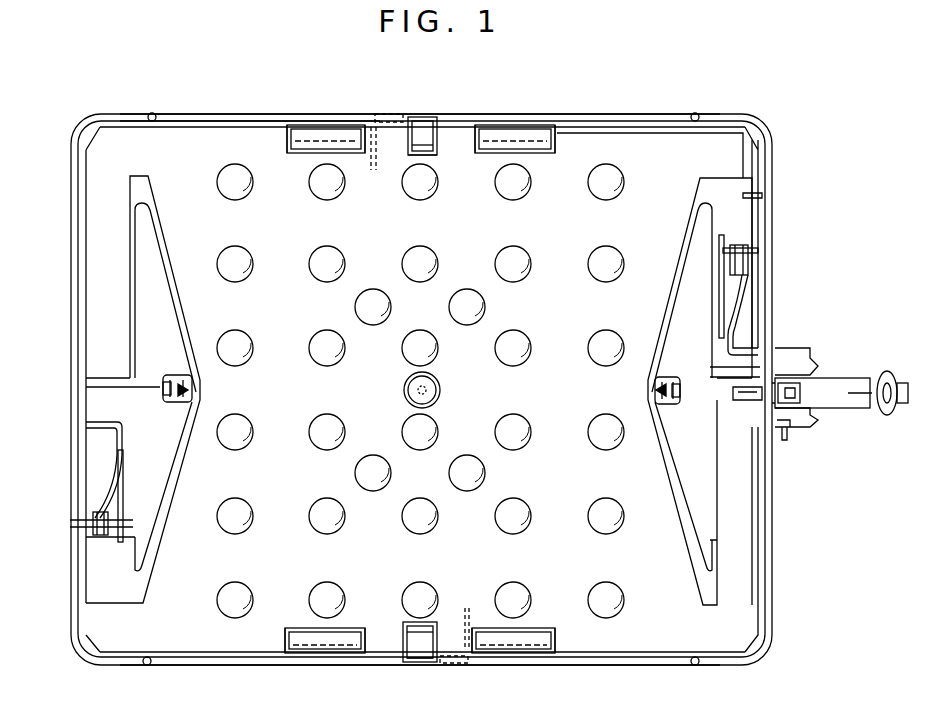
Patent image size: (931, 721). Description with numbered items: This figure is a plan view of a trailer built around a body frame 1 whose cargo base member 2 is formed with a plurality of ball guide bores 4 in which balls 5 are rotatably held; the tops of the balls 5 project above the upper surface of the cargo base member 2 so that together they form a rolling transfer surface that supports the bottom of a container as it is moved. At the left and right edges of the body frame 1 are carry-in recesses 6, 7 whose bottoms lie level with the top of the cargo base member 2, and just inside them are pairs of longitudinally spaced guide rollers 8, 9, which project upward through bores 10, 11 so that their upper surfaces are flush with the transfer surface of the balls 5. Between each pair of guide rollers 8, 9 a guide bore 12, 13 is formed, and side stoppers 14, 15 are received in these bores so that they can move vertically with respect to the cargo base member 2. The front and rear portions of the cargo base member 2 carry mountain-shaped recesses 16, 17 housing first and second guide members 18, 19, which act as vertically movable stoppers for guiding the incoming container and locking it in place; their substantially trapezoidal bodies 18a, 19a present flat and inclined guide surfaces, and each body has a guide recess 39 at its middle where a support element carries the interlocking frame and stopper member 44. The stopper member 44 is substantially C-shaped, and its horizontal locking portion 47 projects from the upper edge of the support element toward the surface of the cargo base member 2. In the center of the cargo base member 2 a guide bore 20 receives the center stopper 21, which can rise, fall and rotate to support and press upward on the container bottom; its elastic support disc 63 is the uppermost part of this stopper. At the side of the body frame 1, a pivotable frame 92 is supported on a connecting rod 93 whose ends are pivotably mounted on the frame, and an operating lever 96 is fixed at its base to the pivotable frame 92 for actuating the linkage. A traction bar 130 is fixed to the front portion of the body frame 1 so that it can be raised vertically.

The body frame 1 is at (775, 525).
The cargo base member 2 is at (650, 128).
The ball guide bores 4 is at (250, 254).
The balls 5 is at (245, 270).
The carry-in recess 6 is at (200, 666).
The carry-in recess 7 is at (205, 114).
The guide rollers 8 is at (325, 652).
The guide rollers 9 is at (335, 137).
The bores 10 is at (540, 628).
The bores 11 is at (556, 137).
The guide bore 12 is at (403, 634).
The guide bore 13 is at (434, 158).
The side stopper 14 is at (418, 648).
The side stopper 15 is at (423, 132).
The mountain-shaped recess 16 is at (656, 356).
The mountain-shaped recess 17 is at (191, 425).
The first guide member 18 is at (703, 470).
The guide member body 18a is at (686, 258).
The second guide member 19 is at (150, 320).
The guide member body 19a is at (167, 270).
The guide bore 20 is at (405, 385).
The center stopper 21 is at (414, 401).
The guide recess 39 is at (166, 392).
The stopper member 44 is at (180, 388).
The locking portion 47 is at (194, 393).
The elastic support disc 63 is at (437, 390).
The pivotable frame 92 is at (98, 512).
The connecting rod 93 is at (112, 520).
The operating lever 96 is at (110, 430).
The traction bar 130 is at (845, 400).